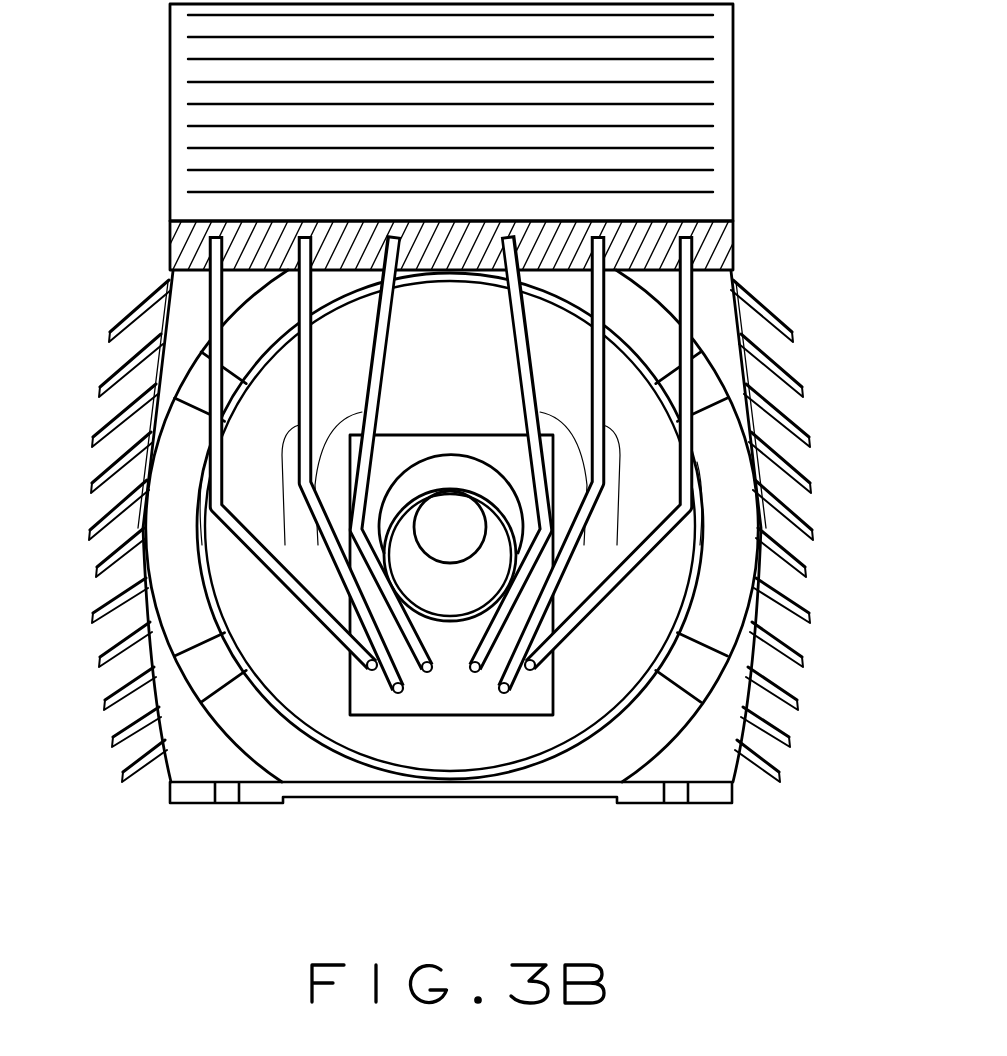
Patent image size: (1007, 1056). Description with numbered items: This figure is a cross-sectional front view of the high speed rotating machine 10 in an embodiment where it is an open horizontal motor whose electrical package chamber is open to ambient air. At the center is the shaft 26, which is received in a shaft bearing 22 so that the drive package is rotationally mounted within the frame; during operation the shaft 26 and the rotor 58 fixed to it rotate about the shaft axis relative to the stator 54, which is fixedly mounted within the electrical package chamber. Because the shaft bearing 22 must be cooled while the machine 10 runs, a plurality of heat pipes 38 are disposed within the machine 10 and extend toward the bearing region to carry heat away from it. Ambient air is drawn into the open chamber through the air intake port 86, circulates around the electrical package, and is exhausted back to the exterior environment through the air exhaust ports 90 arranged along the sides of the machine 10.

The high speed rotating machine 10 is at (108, 124).
The shaft bearing 22 is at (451, 640).
The shaft 26 is at (464, 541).
The heat pipes 38 is at (650, 532).
The stator 54 is at (718, 533).
The rotor 58 is at (650, 618).
The air intake port 86 is at (700, 93).
The air exhaust port 90 is at (97, 560).